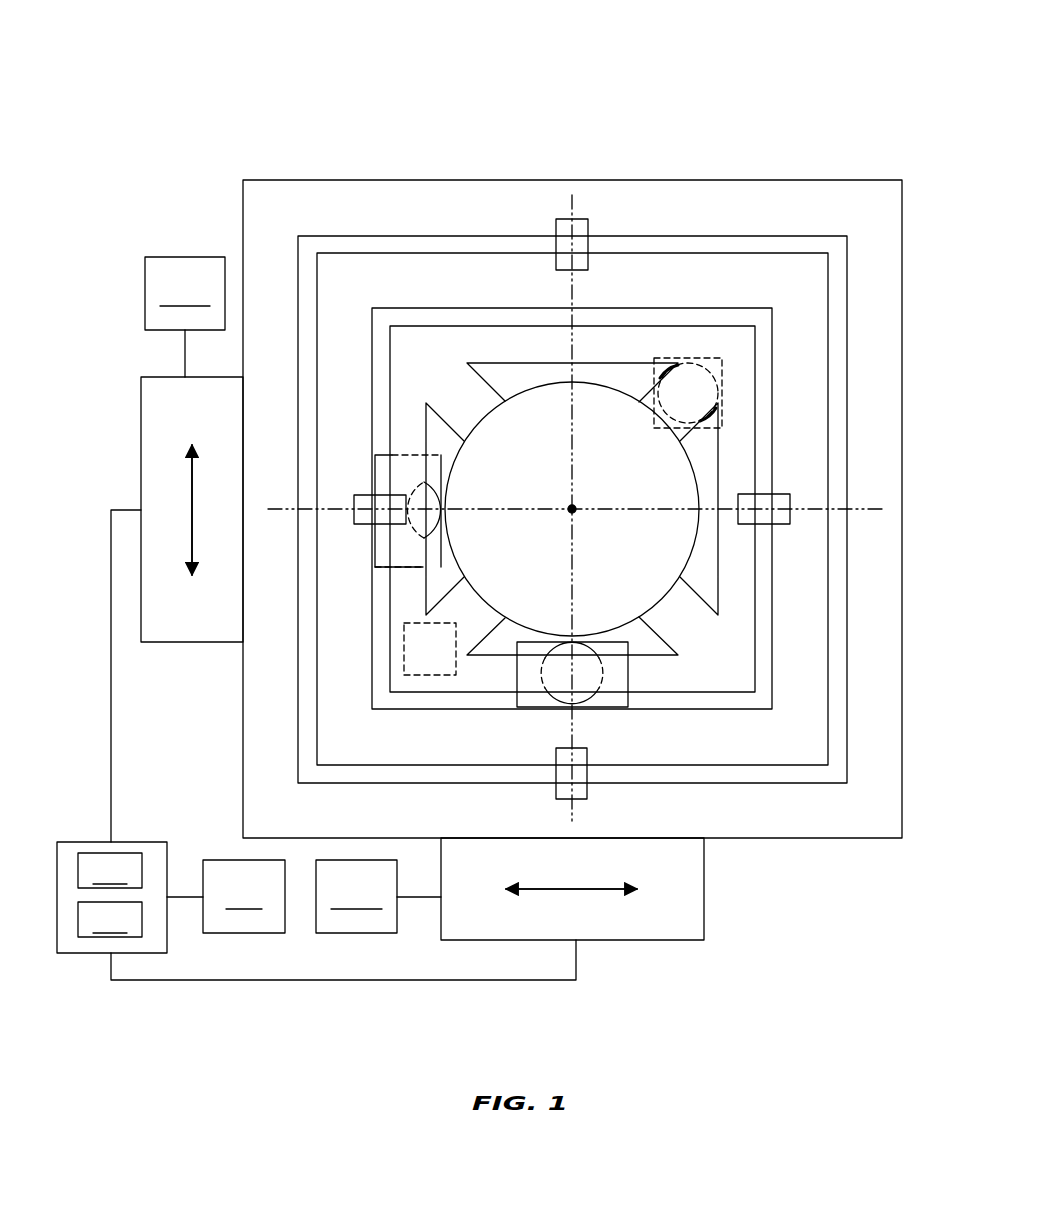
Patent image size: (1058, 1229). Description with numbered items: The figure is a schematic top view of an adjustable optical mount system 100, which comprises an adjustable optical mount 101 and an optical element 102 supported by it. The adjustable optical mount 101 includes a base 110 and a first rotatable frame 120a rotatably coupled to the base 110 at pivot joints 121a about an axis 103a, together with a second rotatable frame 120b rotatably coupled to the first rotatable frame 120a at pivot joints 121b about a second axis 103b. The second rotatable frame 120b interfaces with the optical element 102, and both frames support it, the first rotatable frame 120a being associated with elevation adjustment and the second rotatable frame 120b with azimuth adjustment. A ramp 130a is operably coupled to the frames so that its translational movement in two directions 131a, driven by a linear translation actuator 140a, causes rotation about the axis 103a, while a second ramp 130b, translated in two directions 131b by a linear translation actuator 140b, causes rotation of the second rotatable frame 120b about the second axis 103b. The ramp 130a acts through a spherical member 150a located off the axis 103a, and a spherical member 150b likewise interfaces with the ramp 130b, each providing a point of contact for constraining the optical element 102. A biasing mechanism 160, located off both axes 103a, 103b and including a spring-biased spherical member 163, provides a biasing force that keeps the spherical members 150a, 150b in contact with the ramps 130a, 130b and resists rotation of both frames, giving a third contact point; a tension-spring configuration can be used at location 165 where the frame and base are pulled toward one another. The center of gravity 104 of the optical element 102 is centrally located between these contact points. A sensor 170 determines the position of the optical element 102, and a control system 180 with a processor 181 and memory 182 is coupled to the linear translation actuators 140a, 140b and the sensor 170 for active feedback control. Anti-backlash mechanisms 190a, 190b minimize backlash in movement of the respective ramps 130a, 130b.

The adjustable optical mount system 100 is at (330, 46).
The adjustable optical mount 101 is at (607, 115).
The optical element 102 is at (543, 382).
The axis 103a is at (574, 204).
The second axis 103b is at (868, 512).
The center of gravity 104 is at (575, 512).
The base 110 is at (293, 180).
The first rotatable frame 120a is at (373, 253).
The second rotatable frame 120b is at (457, 326).
The pivot joints 121a is at (588, 242).
The pivot joints 121b is at (762, 525).
The ramp 130a is at (380, 567).
The second ramp 130b is at (593, 703).
The directions 131a is at (192, 488).
The directions 131b is at (587, 889).
The linear translation actuator 140a is at (141, 422).
The linear translation actuator 140b is at (677, 942).
The spherical member 150a is at (383, 530).
The spherical member 150b is at (630, 698).
The biasing mechanism 160 is at (712, 413).
The spherical member 163 is at (697, 428).
The tension spring location 165 is at (404, 666).
The sensor 170 is at (244, 896).
The control system 180 is at (72, 840).
The processor 181 is at (110, 870).
The memory 182 is at (110, 919).
The anti-backlash mechanism 190a is at (185, 317).
The anti-backlash mechanism 190b is at (356, 896).